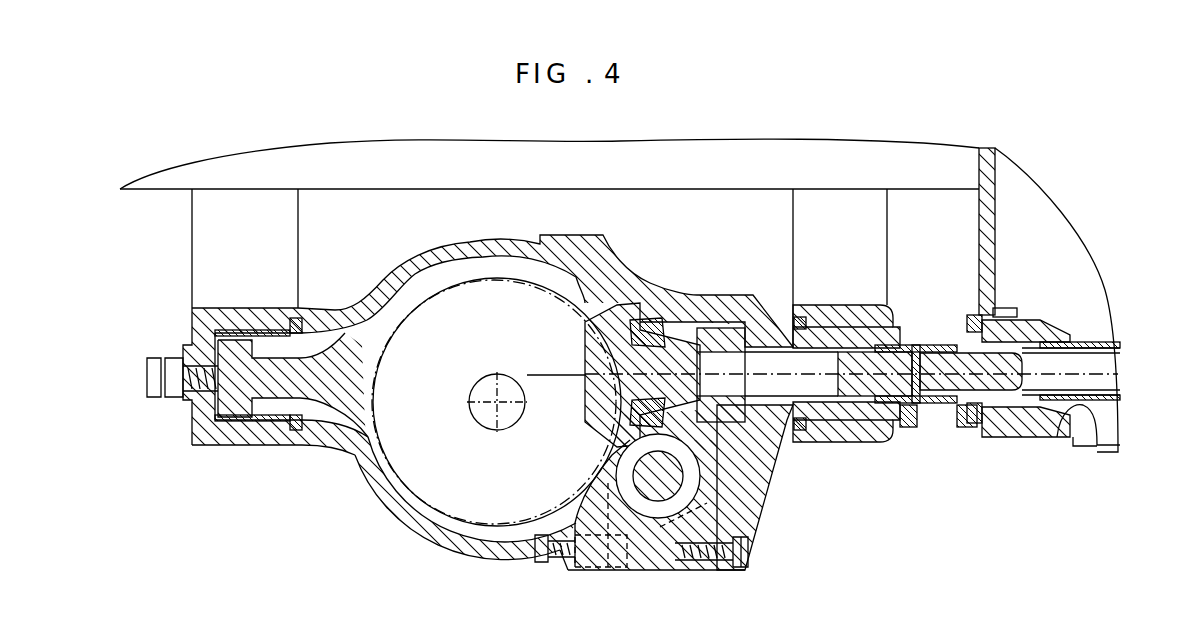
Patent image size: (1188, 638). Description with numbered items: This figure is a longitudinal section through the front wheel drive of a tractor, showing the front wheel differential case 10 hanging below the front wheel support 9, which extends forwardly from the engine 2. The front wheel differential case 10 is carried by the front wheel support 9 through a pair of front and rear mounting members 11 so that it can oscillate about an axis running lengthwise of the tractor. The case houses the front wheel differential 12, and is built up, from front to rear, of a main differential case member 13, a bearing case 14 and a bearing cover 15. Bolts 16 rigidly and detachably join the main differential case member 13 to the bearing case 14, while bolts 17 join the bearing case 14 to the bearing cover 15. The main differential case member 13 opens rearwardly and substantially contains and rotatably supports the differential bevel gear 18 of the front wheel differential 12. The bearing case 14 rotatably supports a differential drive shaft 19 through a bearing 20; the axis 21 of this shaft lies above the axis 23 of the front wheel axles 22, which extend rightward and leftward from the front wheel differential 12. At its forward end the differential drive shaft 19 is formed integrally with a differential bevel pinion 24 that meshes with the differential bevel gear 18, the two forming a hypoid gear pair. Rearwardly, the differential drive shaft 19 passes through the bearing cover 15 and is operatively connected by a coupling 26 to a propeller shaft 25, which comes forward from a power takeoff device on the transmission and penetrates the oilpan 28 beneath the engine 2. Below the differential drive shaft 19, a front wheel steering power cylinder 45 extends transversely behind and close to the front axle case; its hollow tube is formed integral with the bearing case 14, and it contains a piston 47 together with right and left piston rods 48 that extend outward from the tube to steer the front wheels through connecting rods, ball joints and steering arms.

The engine 2 is at (1085, 238).
The front wheel support 9 is at (680, 178).
The mounting members 11 is at (290, 248).
The front wheel differential case 10 is at (410, 548).
The front wheel differential 12 is at (400, 485).
The main differential case member 13 is at (493, 560).
The differential bevel gear 18 is at (365, 443).
The axis 21 is at (548, 373).
The front wheel axles 22 is at (492, 375).
The axis 23 is at (487, 420).
The differential bevel pinion 24 is at (622, 428).
The bearing 20 is at (690, 307).
The piston 47 is at (721, 375).
The differential drive shaft 19 is at (827, 380).
The coupling 26 is at (943, 410).
The oilpan 28 is at (1072, 440).
The propeller shaft 25 is at (1105, 375).
The bearing cover 15 is at (754, 460).
The bearing case 14 is at (665, 558).
The front wheel steering power cylinder 45 is at (707, 482).
The piston rods 48 is at (655, 480).
The bolts 16 is at (570, 555).
The bolts 17 is at (748, 558).